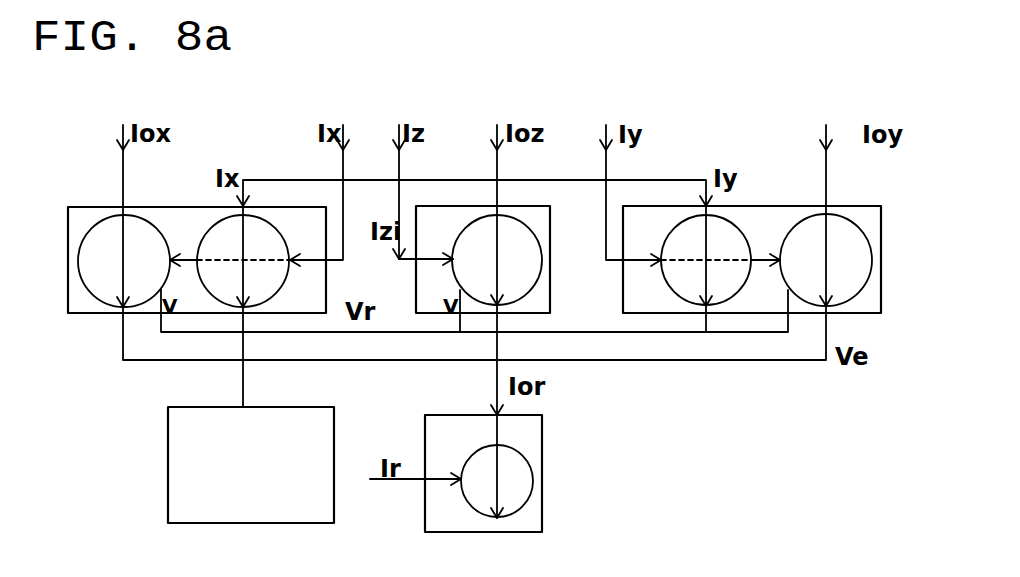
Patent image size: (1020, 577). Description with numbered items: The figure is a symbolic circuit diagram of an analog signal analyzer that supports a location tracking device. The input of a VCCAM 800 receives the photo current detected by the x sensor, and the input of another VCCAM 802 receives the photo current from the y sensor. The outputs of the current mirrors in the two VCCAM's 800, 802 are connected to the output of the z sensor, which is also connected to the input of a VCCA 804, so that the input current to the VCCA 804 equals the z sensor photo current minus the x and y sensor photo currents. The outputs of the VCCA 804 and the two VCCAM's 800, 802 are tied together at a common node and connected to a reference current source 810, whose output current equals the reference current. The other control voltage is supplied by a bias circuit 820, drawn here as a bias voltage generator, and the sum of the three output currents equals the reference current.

The VCCAM 800 is at (100, 312).
The VCCAM 802 is at (790, 215).
The VCCA 804 is at (543, 297).
The reference current source 810 is at (533, 432).
The bias circuit 820 is at (178, 513).